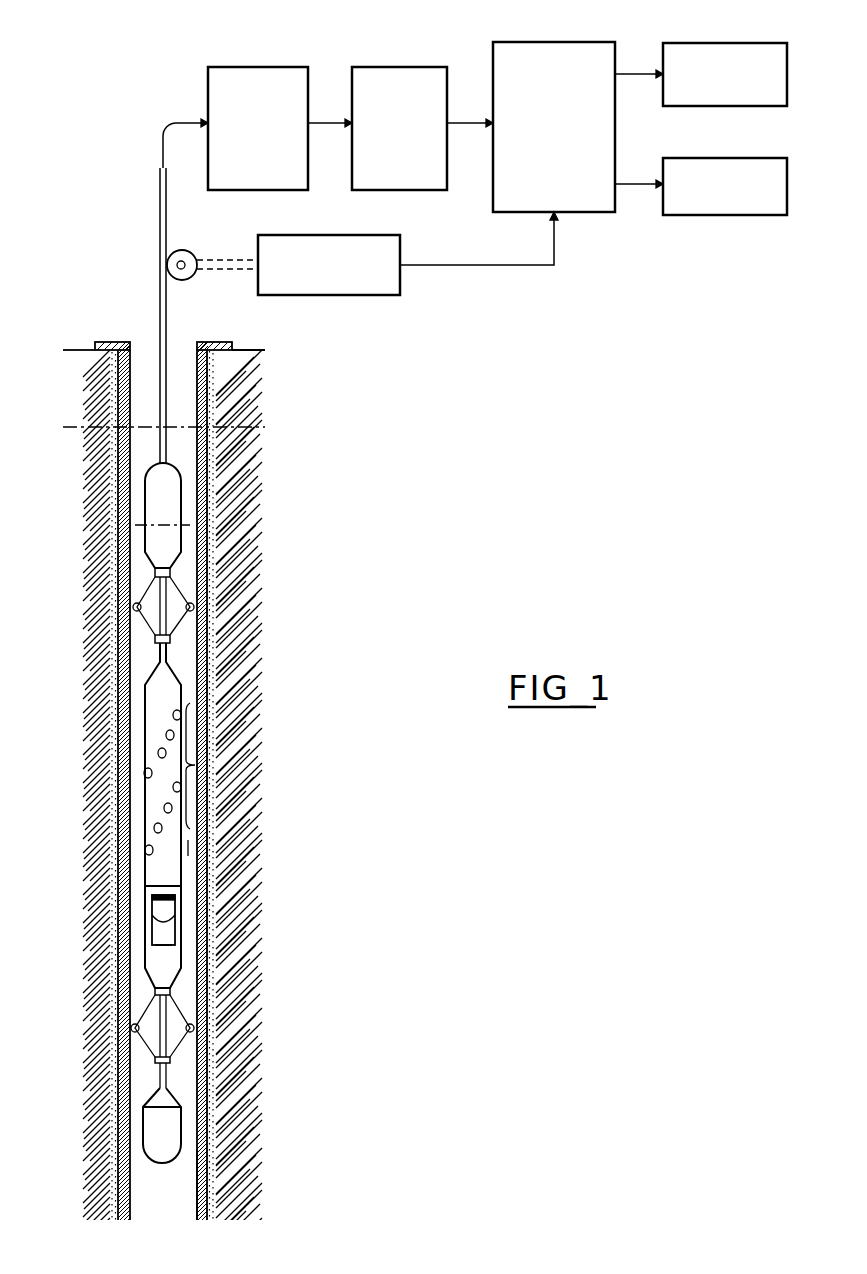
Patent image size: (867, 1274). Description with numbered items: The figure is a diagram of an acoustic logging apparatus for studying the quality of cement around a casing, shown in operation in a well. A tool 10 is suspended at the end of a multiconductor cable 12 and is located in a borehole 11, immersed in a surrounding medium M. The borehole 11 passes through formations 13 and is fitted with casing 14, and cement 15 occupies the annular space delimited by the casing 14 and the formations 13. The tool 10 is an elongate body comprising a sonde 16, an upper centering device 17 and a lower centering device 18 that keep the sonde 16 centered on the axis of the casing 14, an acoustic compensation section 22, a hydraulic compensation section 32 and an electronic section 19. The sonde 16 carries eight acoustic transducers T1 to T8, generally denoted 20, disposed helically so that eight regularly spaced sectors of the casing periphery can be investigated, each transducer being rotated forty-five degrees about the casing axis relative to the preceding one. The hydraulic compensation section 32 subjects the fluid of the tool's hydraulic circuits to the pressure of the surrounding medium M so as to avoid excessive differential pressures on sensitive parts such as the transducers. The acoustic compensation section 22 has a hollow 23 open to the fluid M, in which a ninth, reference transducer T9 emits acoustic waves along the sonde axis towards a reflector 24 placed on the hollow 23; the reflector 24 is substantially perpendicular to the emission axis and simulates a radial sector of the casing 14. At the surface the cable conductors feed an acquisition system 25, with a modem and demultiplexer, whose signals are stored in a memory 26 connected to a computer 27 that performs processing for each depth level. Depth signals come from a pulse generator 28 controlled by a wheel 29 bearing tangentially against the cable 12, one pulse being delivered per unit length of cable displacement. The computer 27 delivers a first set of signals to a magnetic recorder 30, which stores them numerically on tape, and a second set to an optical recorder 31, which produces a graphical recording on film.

The tool 10 is at (162, 813).
The borehole 11 is at (105, 340).
The multiconductor cable 12 is at (160, 203).
The formations 13 is at (223, 490).
The casing 14 is at (207, 1183).
The cement 15 is at (212, 585).
The sonde 16 is at (172, 698).
The upper centering device 17 is at (160, 627).
The lower centering device 18 is at (160, 1058).
The electronic section 19 is at (152, 497).
The acoustic transducers 20 is at (195, 765).
The acoustic compensation section 22 is at (153, 913).
The hollow 23 is at (170, 935).
The reflector 24 is at (153, 920).
The acquisition system 25 is at (245, 78).
The memory 26 is at (392, 83).
The computer 27 is at (557, 60).
The pulse generator 28 is at (330, 283).
The wheel 29 is at (187, 253).
The magnetic recorder 30 is at (737, 50).
The optical recorder 31 is at (720, 208).
The hydraulic compensation section 32 is at (170, 1130).
The acoustic transducer T1 is at (175, 722).
The acoustic transducer T8 is at (148, 850).
The reference transducer T9 is at (172, 888).
The surrounding medium M is at (188, 847).